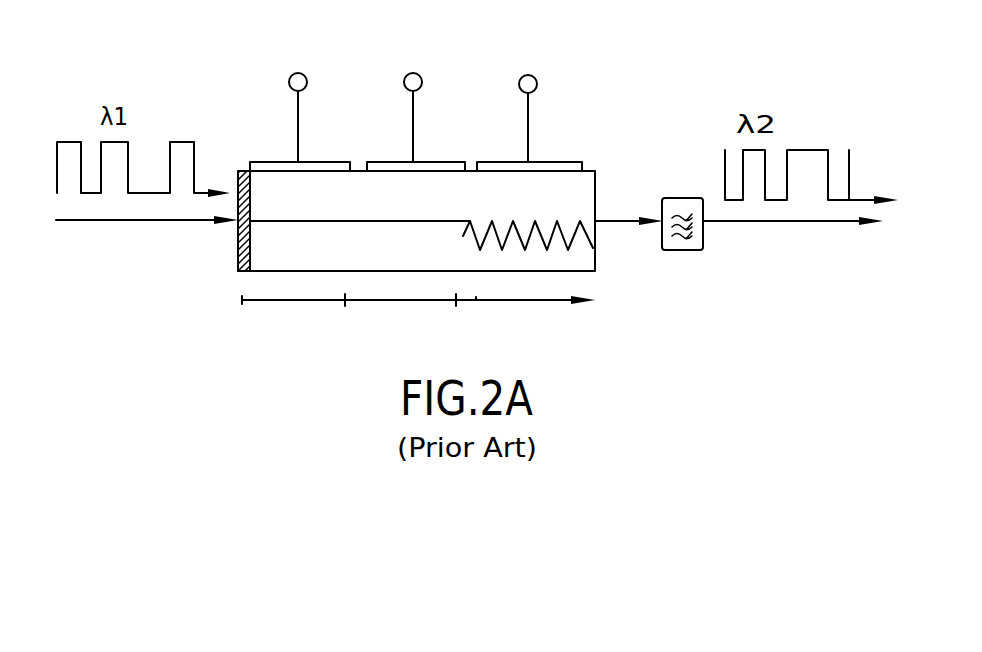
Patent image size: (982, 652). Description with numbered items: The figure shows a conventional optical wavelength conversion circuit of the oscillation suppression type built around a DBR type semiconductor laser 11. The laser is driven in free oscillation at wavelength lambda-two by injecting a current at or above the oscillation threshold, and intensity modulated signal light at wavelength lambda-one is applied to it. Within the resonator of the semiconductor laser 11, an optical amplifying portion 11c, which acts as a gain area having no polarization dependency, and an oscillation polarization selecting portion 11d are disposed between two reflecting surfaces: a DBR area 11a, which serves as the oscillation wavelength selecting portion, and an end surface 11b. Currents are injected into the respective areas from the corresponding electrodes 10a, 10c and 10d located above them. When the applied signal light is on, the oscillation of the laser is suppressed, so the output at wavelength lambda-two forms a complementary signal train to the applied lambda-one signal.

The semiconductor laser 11 is at (268, 187).
The end surface 11b is at (238, 255).
The optical amplifying portion 11c is at (293, 314).
The oscillation polarization selecting portion 11d is at (400, 314).
The DBR area 11a is at (525, 317).
The electrode 10c is at (340, 162).
The phase control electrode 10d is at (447, 162).
The electrode 10a is at (565, 162).